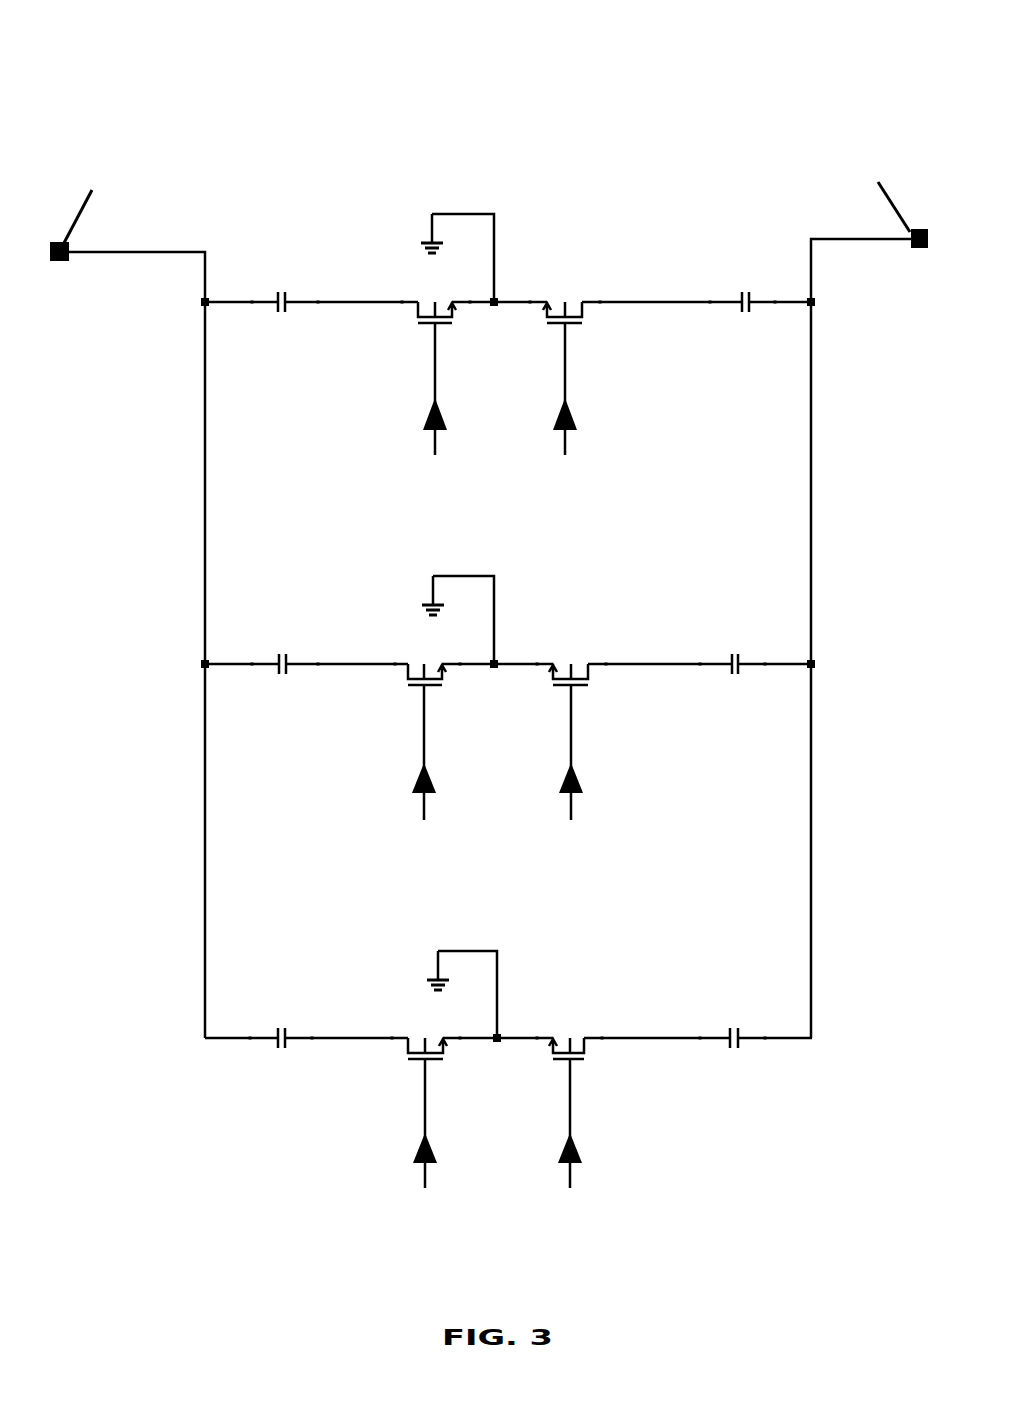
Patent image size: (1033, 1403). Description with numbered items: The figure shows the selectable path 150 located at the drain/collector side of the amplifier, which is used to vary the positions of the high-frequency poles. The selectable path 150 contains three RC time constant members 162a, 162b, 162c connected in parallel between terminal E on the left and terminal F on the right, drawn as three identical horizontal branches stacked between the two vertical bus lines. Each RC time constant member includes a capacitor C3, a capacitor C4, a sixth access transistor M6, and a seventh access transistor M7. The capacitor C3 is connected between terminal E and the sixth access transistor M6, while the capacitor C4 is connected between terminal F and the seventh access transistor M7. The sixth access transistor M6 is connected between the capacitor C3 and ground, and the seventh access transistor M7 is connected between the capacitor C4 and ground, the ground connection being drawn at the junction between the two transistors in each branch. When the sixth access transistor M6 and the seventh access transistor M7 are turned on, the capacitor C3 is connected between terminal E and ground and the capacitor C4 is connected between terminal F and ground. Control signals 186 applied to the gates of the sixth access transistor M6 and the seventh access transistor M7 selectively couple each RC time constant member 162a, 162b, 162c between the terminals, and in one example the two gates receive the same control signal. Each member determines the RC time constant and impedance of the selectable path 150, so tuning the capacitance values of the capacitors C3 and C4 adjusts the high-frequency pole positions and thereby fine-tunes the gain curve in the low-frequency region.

The selectable path 150 is at (126, 48).
The RC time constant member 162a is at (194, 322).
The RC time constant member 162b is at (194, 643).
The RC time constant member 162c is at (194, 1013).
The capacitor C3 is at (284, 320).
The capacitor C4 is at (742, 320).
The sixth access transistor M6 is at (404, 281).
The seventh access transistor M7 is at (588, 281).
The control signals 186 is at (445, 422).